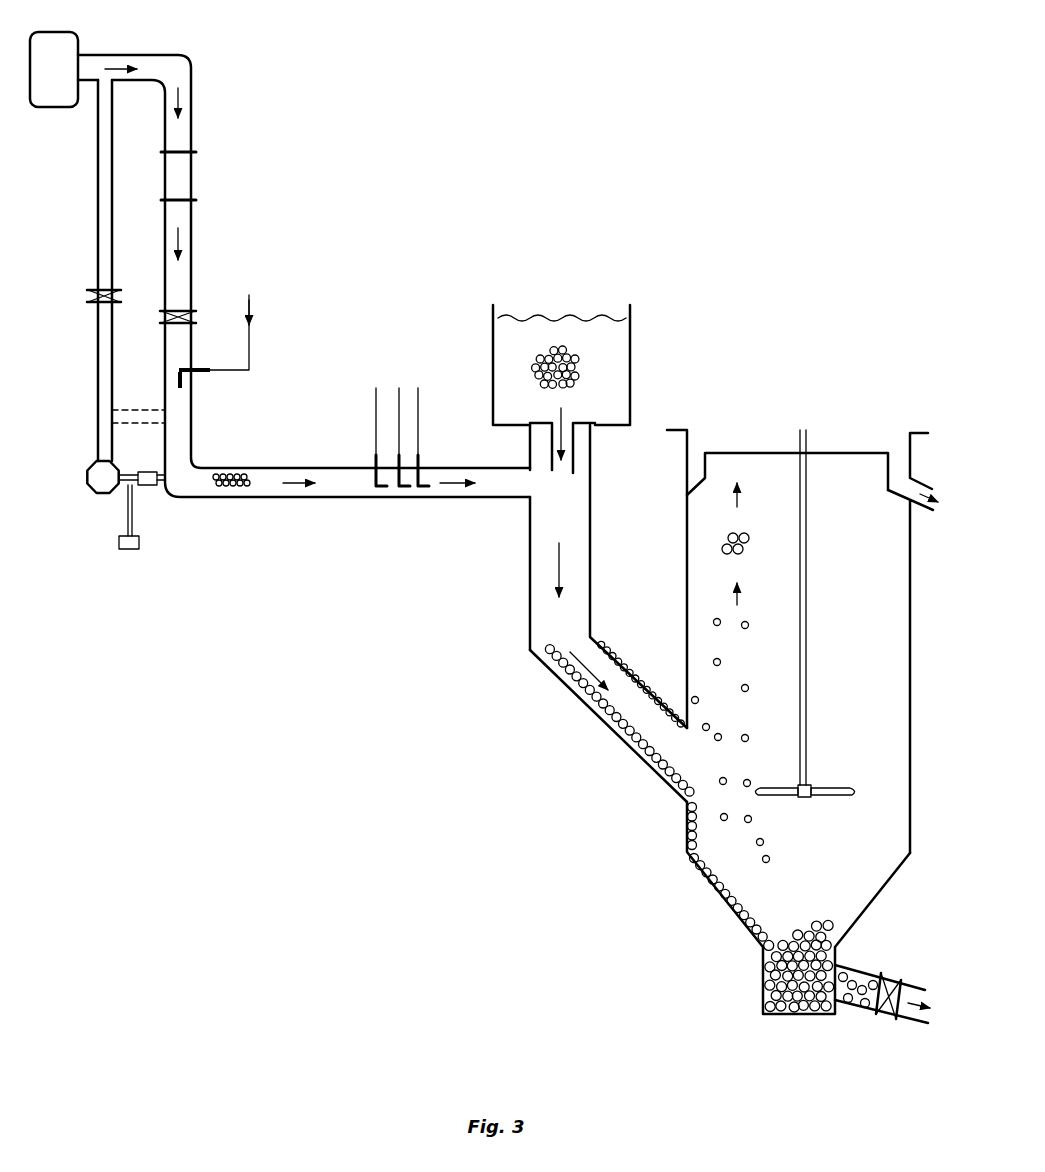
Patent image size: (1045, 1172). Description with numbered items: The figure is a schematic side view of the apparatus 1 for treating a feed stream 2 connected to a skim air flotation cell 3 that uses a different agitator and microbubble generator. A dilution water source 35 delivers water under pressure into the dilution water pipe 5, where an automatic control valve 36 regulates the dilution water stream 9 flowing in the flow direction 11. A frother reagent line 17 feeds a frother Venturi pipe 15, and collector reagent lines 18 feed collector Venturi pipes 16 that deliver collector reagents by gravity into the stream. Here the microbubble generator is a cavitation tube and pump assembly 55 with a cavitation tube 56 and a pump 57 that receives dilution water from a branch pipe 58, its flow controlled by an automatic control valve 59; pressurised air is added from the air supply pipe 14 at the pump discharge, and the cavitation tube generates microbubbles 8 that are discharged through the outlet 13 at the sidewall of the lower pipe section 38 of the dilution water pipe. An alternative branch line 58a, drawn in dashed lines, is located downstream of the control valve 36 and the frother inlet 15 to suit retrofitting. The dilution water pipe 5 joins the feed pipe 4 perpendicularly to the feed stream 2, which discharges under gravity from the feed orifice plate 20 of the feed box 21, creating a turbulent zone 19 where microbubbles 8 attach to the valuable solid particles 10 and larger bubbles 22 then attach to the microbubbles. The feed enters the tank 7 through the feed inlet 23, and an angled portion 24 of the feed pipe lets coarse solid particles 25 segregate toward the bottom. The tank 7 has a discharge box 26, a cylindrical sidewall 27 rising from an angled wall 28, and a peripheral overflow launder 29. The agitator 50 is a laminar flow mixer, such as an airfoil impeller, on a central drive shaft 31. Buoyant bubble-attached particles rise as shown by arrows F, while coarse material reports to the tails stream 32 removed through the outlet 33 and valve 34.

The apparatus 1 is at (381, 221).
The feed stream 2 is at (585, 569).
The skim air flotation cell 3 is at (832, 423).
The feed pipe 4 is at (527, 613).
The dilution water pipe 5 is at (165, 249).
The tank 7 is at (686, 505).
The microbubbles 8 is at (230, 492).
The dilution water stream 9 is at (400, 490).
The solid particles 10 is at (576, 362).
The flow direction 11 is at (306, 490).
The outlet 13 is at (186, 466).
The air supply pipe 14 is at (127, 516).
The Venturi pipe 15 is at (193, 368).
The Venturi pipes 16 is at (373, 460).
The frother reagent line 17 is at (251, 308).
The collector reagent lines 18 is at (374, 424).
The turbulent zone 19 is at (554, 505).
The feed orifice plate 20 is at (578, 447).
The feed box 21 is at (632, 372).
The bubbles 22 is at (746, 534).
The feed inlet 23 is at (687, 763).
The angled portion 24 is at (588, 705).
The coarse solid particles 25 is at (553, 670).
The discharge box 26 is at (838, 956).
The sidewall 27 is at (686, 583).
The angled wall 28 is at (692, 868).
The overflow launder 29 is at (702, 462).
The drive shaft 31 is at (807, 735).
The tails stream 32 is at (864, 1004).
The outlet 33 is at (866, 970).
The valve 34 is at (884, 1016).
The dilution water source 35 is at (60, 47).
The automatic control valve 36 is at (160, 319).
The pipe section 38 is at (185, 418).
The agitator 50 is at (824, 796).
The cavitation tube and pump assembly 55 is at (75, 446).
The cavitation tube 56 is at (145, 472).
The pump 57 is at (86, 478).
The branch pipe 58 is at (98, 210).
The branch line 58a is at (136, 404).
The automatic control valve 59 is at (88, 296).
The arrows F is at (737, 490).